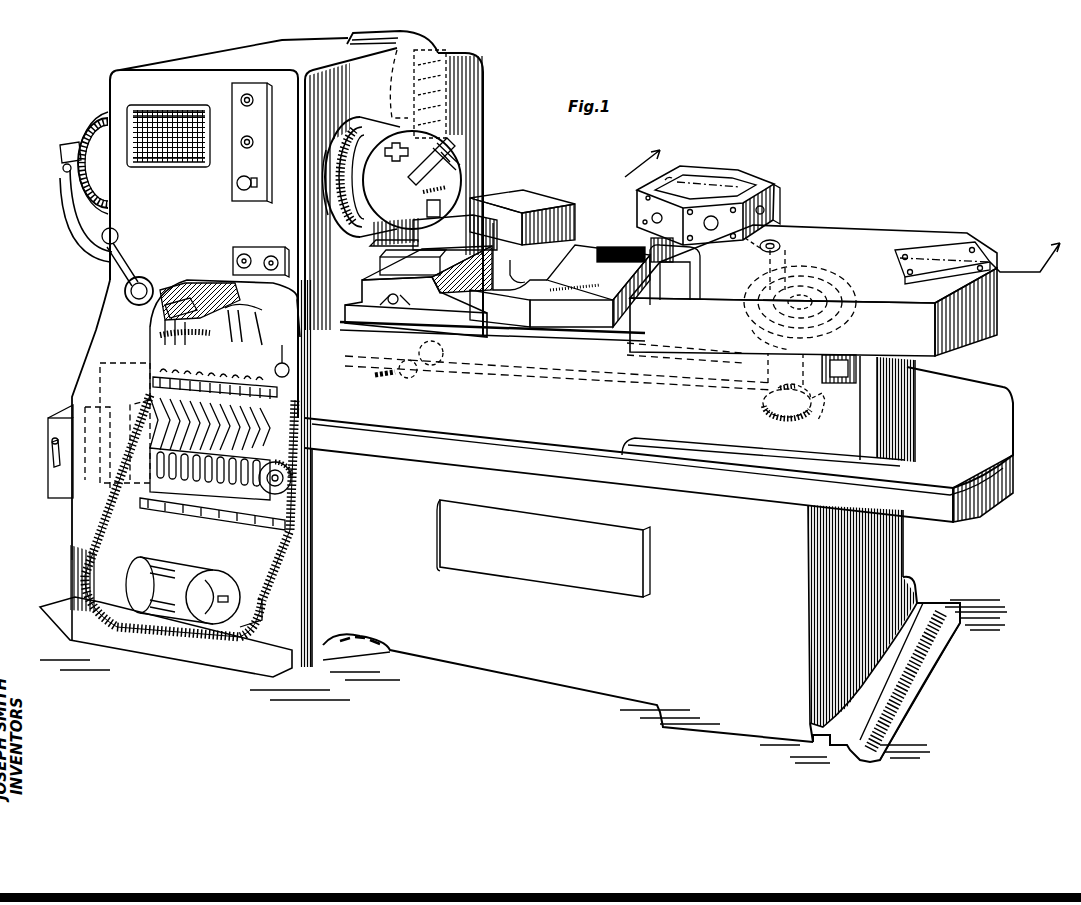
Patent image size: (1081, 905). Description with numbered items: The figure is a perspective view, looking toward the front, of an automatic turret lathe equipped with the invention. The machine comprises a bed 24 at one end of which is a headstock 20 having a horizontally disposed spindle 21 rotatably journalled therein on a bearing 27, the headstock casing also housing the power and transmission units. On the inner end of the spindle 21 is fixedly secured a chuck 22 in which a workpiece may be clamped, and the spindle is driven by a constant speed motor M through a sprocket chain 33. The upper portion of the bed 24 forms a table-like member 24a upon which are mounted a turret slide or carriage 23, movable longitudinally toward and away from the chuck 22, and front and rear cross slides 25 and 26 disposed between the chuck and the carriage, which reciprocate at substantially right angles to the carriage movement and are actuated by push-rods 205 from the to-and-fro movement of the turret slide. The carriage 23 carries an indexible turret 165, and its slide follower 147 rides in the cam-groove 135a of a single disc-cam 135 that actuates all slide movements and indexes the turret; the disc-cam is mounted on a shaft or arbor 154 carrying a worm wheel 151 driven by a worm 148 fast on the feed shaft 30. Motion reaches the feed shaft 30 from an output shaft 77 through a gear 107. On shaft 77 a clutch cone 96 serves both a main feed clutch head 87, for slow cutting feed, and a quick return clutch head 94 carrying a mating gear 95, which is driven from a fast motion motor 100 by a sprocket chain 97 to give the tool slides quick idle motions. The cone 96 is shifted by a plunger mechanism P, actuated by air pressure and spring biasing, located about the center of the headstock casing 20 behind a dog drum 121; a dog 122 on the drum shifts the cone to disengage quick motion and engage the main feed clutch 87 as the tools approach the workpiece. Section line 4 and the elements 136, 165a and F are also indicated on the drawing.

The headstock 20 is at (104, 322).
The spindle 21 is at (367, 137).
The chuck 22 is at (412, 180).
The turret slide or carriage 23 is at (787, 287).
The bed 24 is at (727, 722).
The table-like member 24a is at (855, 452).
The front cross slide 25 is at (423, 290).
The rear cross slide 26 is at (572, 210).
The bearing 27 is at (350, 140).
The feed shaft 30 is at (633, 380).
The sprocket chain 33 is at (437, 53).
The output shaft 77 is at (148, 332).
The main feed clutch head 87 is at (233, 307).
The quick return clutch head 94 is at (172, 298).
The mating gear 95 is at (153, 353).
The clutch slide or cone 96 is at (198, 296).
The sprocket chain 97 is at (120, 538).
The fast motion motor 100 is at (208, 566).
The gear 107 is at (418, 380).
The dog drum 121 is at (300, 490).
The dog 122 is at (217, 503).
The disc-cam 135 is at (843, 313).
The cam-groove 135a is at (835, 278).
The slide 136 is at (543, 308).
The slide follower 147 is at (747, 297).
The worm 148 is at (817, 395).
The worm wheel 151 is at (760, 408).
The shaft or arbor 154 is at (740, 390).
The turret 165 is at (708, 184).
The bracket side 165a is at (777, 200).
The push-rods 205 is at (627, 250).
The section line 4- 4 is at (842, 202).
The constant speed motor M is at (394, 176).
The plunger mechanism P is at (250, 310).
The feed finger F is at (281, 362).